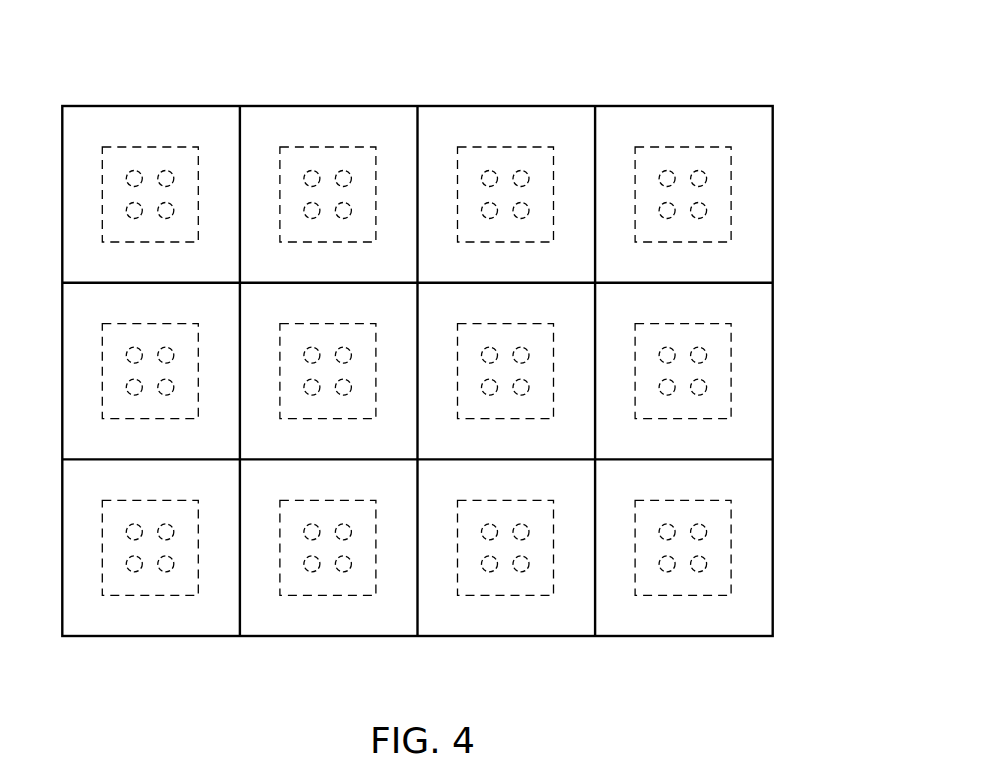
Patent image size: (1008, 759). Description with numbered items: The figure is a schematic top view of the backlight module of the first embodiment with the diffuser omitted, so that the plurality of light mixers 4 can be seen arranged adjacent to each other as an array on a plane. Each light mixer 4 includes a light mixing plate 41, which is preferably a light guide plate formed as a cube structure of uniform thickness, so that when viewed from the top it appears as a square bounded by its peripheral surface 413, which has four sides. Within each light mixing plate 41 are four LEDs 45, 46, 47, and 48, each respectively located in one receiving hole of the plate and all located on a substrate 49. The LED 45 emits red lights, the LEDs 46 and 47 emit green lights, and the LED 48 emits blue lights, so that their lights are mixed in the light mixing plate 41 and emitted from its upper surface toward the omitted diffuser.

The light mixer 4 is at (705, 98).
The light mixing plate 41 is at (748, 122).
The peripheral surface 413 is at (593, 188).
The LED 45 is at (666, 175).
The LED 46 is at (700, 178).
The LED 47 is at (663, 207).
The LED 48 is at (702, 208).
The substrate 49 is at (693, 240).